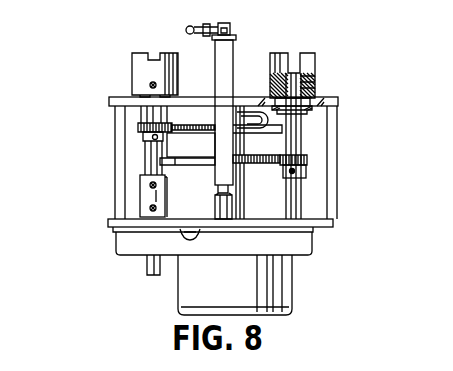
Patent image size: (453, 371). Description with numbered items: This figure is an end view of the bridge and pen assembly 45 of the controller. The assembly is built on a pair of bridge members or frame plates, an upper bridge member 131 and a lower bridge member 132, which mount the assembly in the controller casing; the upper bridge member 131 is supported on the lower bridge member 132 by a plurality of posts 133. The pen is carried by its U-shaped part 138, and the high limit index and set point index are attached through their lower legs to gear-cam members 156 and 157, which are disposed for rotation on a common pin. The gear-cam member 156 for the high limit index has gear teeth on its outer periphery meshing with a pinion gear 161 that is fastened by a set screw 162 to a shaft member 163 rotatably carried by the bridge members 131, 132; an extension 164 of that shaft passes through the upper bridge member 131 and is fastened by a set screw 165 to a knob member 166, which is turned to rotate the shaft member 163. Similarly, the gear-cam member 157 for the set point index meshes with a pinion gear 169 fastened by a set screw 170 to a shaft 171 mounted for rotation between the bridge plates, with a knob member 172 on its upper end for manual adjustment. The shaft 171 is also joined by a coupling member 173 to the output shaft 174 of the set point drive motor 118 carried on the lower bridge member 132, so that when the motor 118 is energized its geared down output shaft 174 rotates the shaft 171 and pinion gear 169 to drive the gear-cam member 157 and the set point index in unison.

The bridge and pen assembly 45 is at (99, 100).
The set point drive motor 118 is at (265, 285).
The upper bridge member 131 is at (332, 223).
The lower bridge member 132 is at (338, 101).
The posts 133 is at (125, 117).
The U-shaped part 138 is at (233, 181).
The gear-cam member 156 is at (193, 165).
The gear-cam member 157 is at (192, 128).
The pinion gear 161 is at (308, 158).
The set screw 162 is at (294, 172).
The shaft member 163 is at (296, 193).
The extension 164 is at (318, 87).
The set screw 165 is at (318, 78).
The knob member 166 is at (316, 60).
The pinion gear 169 is at (140, 127).
The set screw 170 is at (148, 142).
The shaft 171 is at (150, 158).
The knob member 172 is at (132, 69).
The coupling member 173 is at (143, 194).
The output shaft 174 is at (146, 265).